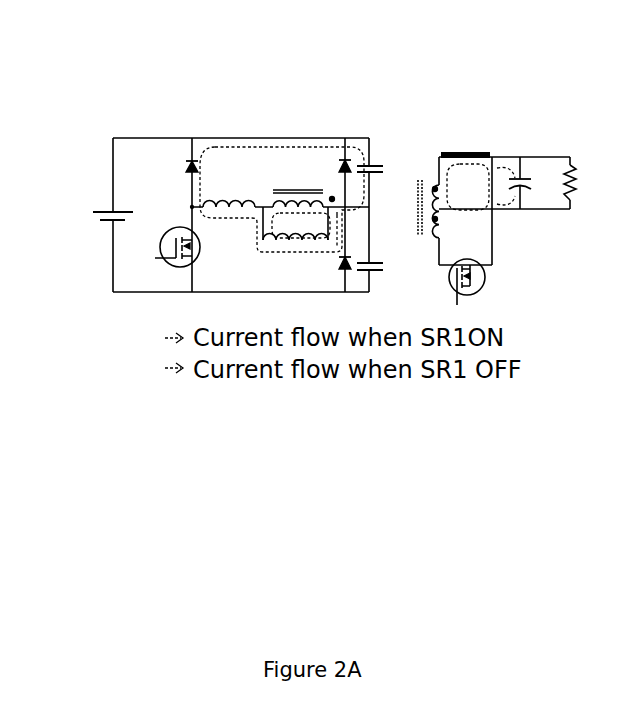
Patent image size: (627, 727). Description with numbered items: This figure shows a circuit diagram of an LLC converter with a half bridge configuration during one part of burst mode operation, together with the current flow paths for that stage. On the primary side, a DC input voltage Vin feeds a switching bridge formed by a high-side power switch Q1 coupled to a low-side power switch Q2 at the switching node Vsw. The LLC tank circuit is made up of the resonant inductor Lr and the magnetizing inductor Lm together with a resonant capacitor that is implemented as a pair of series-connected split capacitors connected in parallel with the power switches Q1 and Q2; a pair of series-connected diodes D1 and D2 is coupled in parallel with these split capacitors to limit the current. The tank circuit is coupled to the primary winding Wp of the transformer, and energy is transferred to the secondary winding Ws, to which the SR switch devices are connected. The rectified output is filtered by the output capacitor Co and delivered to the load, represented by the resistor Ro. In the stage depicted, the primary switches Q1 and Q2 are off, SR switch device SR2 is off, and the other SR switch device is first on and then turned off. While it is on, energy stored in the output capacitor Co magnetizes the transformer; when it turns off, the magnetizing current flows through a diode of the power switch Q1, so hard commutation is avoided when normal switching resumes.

The DC input voltage Vin is at (101, 216).
The high-side power switch Q1 is at (172, 167).
The switching node Vsw is at (189, 204).
The low-side power switch Q2 is at (165, 247).
The resonant inductor Lr is at (229, 195).
The primary winding Wp is at (292, 196).
The magnetizing inductor Lm is at (295, 238).
The first diode D1 is at (332, 167).
The second diode D2 is at (334, 265).
The secondary winding Ws is at (445, 216).
The output capacitor Co is at (531, 176).
The load resistor Ro is at (583, 181).
The SR switch device SR2 is at (479, 282).